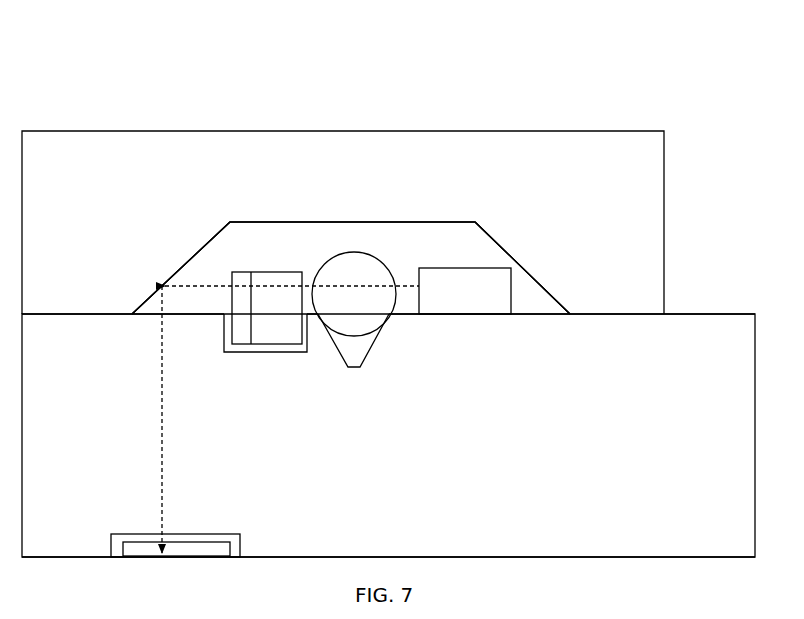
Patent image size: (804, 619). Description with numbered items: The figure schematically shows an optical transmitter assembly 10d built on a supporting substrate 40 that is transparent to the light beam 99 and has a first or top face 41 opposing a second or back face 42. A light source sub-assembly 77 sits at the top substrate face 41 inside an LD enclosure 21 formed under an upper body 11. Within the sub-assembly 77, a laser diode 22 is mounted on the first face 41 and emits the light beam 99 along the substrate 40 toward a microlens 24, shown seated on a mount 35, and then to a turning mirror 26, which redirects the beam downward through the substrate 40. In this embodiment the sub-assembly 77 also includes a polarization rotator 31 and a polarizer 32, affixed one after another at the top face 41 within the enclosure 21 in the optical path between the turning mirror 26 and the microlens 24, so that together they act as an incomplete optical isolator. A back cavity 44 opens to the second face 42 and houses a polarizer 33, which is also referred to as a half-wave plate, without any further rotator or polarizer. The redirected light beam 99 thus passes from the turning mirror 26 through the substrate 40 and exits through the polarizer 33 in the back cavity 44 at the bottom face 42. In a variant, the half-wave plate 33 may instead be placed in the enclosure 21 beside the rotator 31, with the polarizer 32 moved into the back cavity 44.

The optical transmitter assembly 10d is at (236, 100).
The upper substrate / cover 11 is at (66, 173).
The supporting substrate 40 is at (69, 354).
The LD enclosure 21 is at (427, 236).
The light source sub-assembly 77 is at (427, 234).
The turning mirror 26 is at (198, 251).
The first face 41 is at (533, 316).
The polarization rotator 31 is at (267, 271).
The polarizer 32 is at (246, 340).
The microlens 24 is at (357, 252).
The light beam 99 is at (375, 287).
The lens mount 35 is at (377, 342).
The laser diode 22 is at (475, 301).
The back cavity 44 is at (228, 534).
The polarizer 33 is at (140, 542).
The second face 42 is at (602, 554).